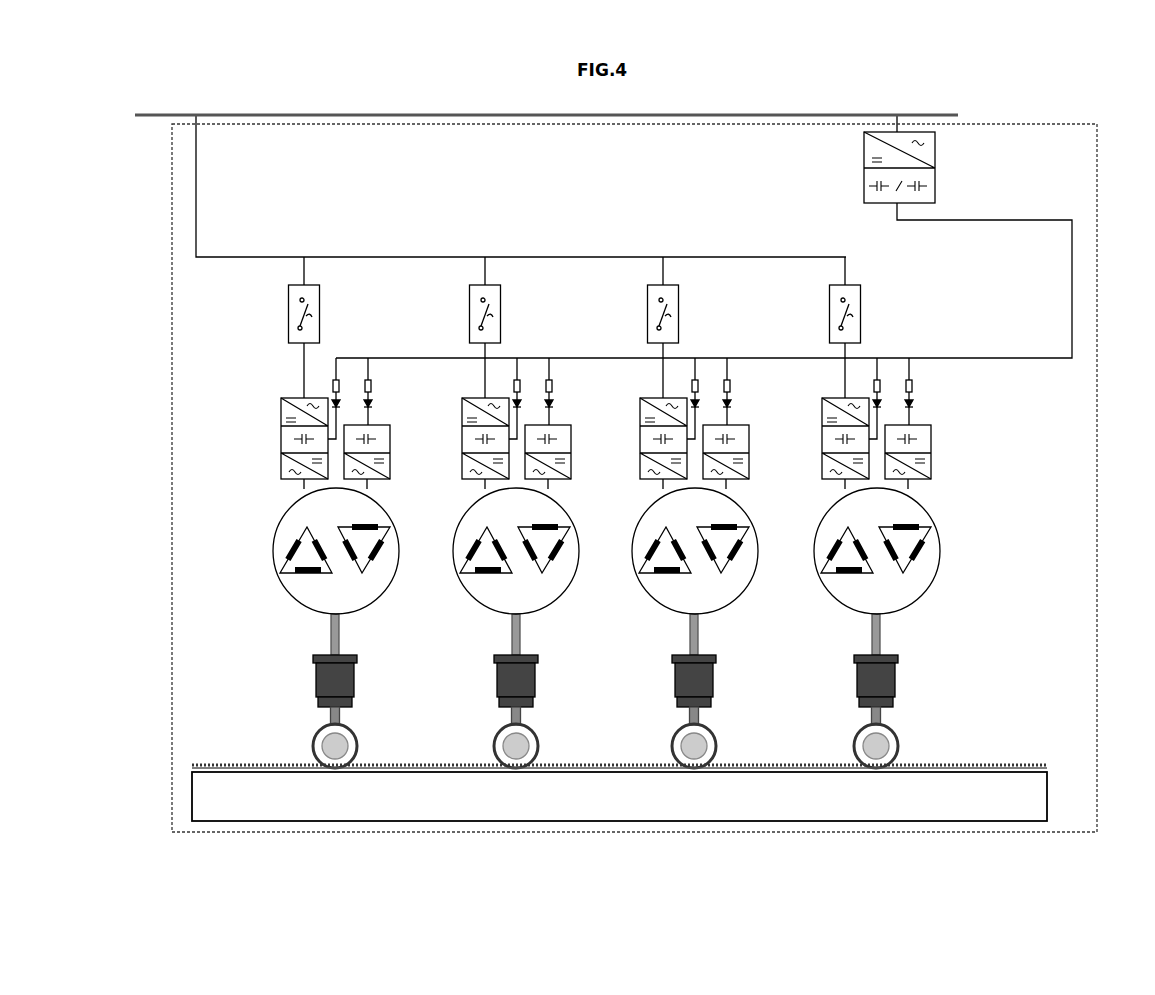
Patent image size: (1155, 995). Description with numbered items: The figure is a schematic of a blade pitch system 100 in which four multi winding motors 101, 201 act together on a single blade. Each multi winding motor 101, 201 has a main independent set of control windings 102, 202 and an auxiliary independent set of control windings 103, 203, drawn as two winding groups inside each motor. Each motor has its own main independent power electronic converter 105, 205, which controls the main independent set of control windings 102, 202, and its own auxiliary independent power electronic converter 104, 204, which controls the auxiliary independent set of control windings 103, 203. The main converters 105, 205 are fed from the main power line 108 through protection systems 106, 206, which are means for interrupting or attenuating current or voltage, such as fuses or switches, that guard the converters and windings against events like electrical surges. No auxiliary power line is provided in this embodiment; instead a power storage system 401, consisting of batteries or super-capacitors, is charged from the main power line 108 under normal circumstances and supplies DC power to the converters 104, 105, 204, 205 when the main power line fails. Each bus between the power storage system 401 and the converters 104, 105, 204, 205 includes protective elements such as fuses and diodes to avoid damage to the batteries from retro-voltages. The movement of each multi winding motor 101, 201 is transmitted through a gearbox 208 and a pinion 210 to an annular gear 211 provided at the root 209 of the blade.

The blade pitch system 100 is at (1022, 121).
The main power line 108 is at (200, 111).
The power storage system 401 is at (861, 178).
The protection system 106 is at (287, 309).
The protection system 206 is at (468, 309).
The main independent power electronic converter 105 is at (279, 417).
The main independent power electronic converter 205 is at (460, 417).
The auxiliary independent power electronic converter 104 is at (393, 472).
The auxiliary independent power electronic converter 204 is at (574, 472).
The multi winding motor 101 is at (272, 591).
The multi winding motor 201 is at (453, 591).
The main independent set of control windings 102 is at (305, 586).
The main independent set of control windings 202 is at (486, 586).
The auxiliary independent set of control windings 103 is at (360, 576).
The auxiliary independent set of control windings 203 is at (541, 576).
The gearbox 208 is at (311, 678).
The pinion 210 is at (361, 747).
The annular gear 211 is at (1051, 766).
The root of the blade 209 is at (1051, 800).